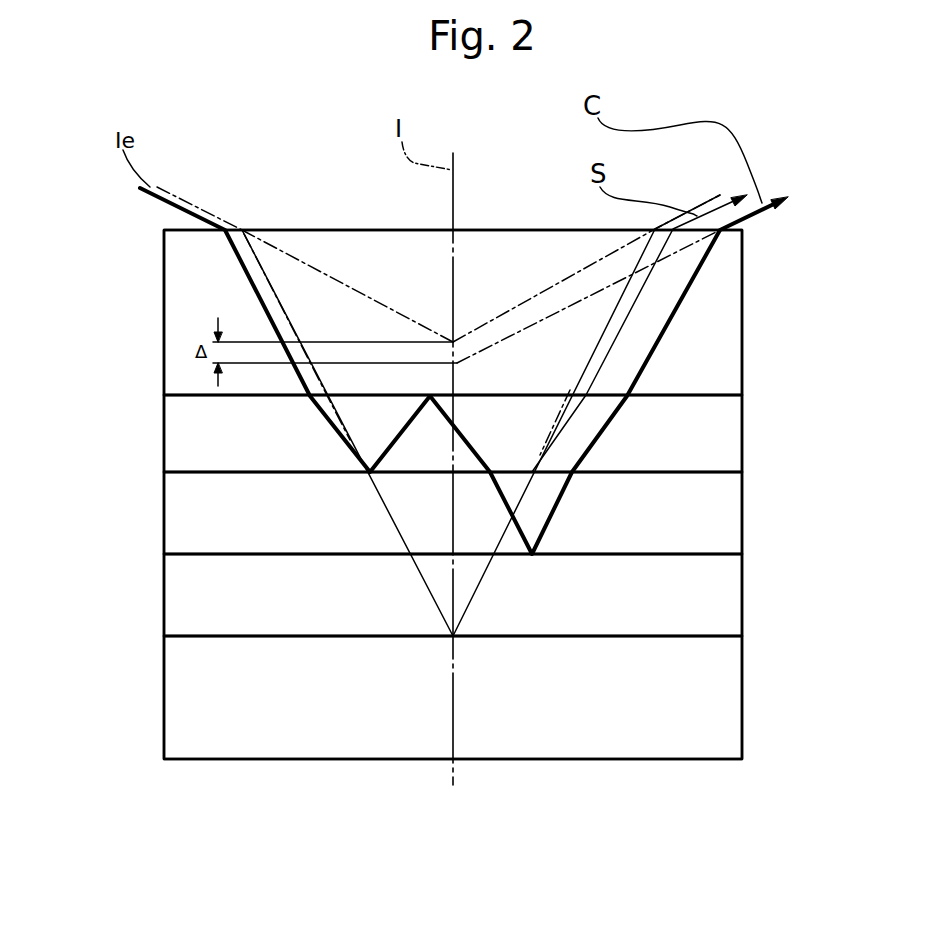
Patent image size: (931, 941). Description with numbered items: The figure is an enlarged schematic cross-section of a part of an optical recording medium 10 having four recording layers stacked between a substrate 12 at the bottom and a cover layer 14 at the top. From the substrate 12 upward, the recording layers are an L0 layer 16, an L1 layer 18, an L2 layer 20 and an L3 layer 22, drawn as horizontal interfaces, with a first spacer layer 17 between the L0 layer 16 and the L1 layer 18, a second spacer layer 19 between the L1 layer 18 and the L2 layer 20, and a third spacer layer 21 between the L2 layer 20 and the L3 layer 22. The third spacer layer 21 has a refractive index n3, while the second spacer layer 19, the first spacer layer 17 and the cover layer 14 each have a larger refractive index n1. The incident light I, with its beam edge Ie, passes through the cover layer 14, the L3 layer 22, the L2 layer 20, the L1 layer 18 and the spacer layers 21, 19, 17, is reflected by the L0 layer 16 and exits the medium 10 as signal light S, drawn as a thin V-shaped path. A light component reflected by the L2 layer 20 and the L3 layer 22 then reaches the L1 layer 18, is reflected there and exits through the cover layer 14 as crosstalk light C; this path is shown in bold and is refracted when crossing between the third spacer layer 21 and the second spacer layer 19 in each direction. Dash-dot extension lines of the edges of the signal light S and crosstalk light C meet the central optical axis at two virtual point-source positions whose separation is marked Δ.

The optical recording medium 10 is at (160, 737).
The substrate 12 is at (745, 636).
The cover layer 14 is at (745, 230).
The L0 layer 16 is at (184, 636).
The first spacer layer 17 is at (745, 554).
The L1 layer 18 is at (184, 554).
The second spacer layer 19 is at (745, 472).
The L2 layer 20 is at (184, 472).
The third spacer layer 21 is at (745, 395).
The L3 layer 22 is at (183, 396).